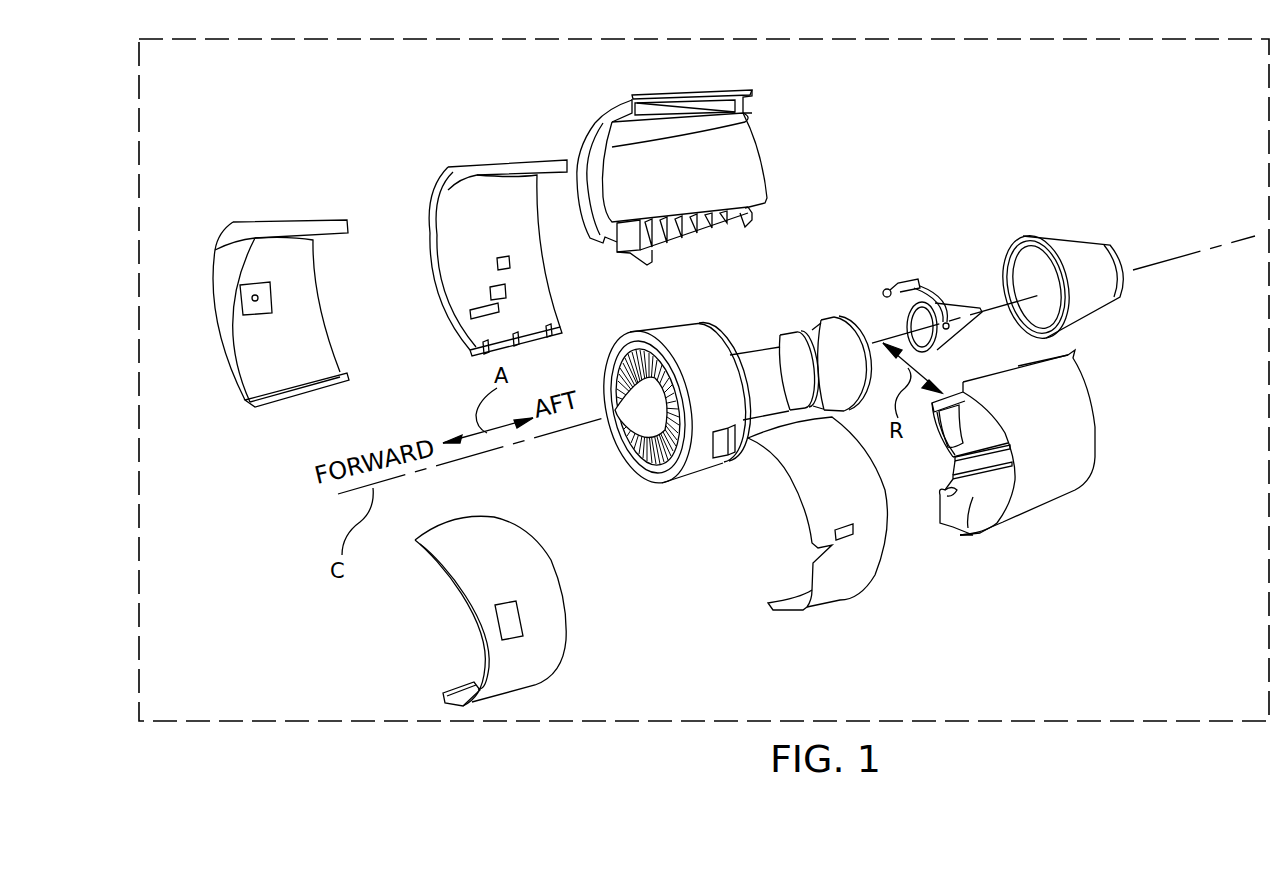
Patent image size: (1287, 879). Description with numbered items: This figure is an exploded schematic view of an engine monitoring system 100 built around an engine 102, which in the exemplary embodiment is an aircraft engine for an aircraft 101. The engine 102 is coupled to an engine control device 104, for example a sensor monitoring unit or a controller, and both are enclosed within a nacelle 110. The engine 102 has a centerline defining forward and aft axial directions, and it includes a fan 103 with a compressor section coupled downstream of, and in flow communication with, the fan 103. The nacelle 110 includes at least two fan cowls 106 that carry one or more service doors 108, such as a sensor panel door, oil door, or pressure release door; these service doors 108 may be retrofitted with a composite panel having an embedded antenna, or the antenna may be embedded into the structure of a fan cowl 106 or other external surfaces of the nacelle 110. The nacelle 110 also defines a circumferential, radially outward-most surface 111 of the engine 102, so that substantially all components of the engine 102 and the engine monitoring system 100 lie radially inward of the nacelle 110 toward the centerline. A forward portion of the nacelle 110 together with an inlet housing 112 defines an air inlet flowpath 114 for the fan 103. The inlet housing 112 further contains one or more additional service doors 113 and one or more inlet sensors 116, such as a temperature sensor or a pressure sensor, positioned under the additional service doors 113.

The engine monitoring system 100 is at (520, 110).
The aircraft 101 is at (938, 721).
The engine 102 is at (693, 352).
The fan 103 is at (640, 450).
The engine control device 104 is at (732, 460).
The fan cowl 106 is at (437, 282).
The service door 108 is at (509, 262).
The nacelle 110 is at (1143, 384).
The radially outward-most surface 111 is at (842, 582).
The inlet housing 112 is at (292, 218).
The additional service door 113 is at (520, 617).
The air inlet flowpath 114 is at (290, 507).
The inlet sensor 116 is at (258, 298).